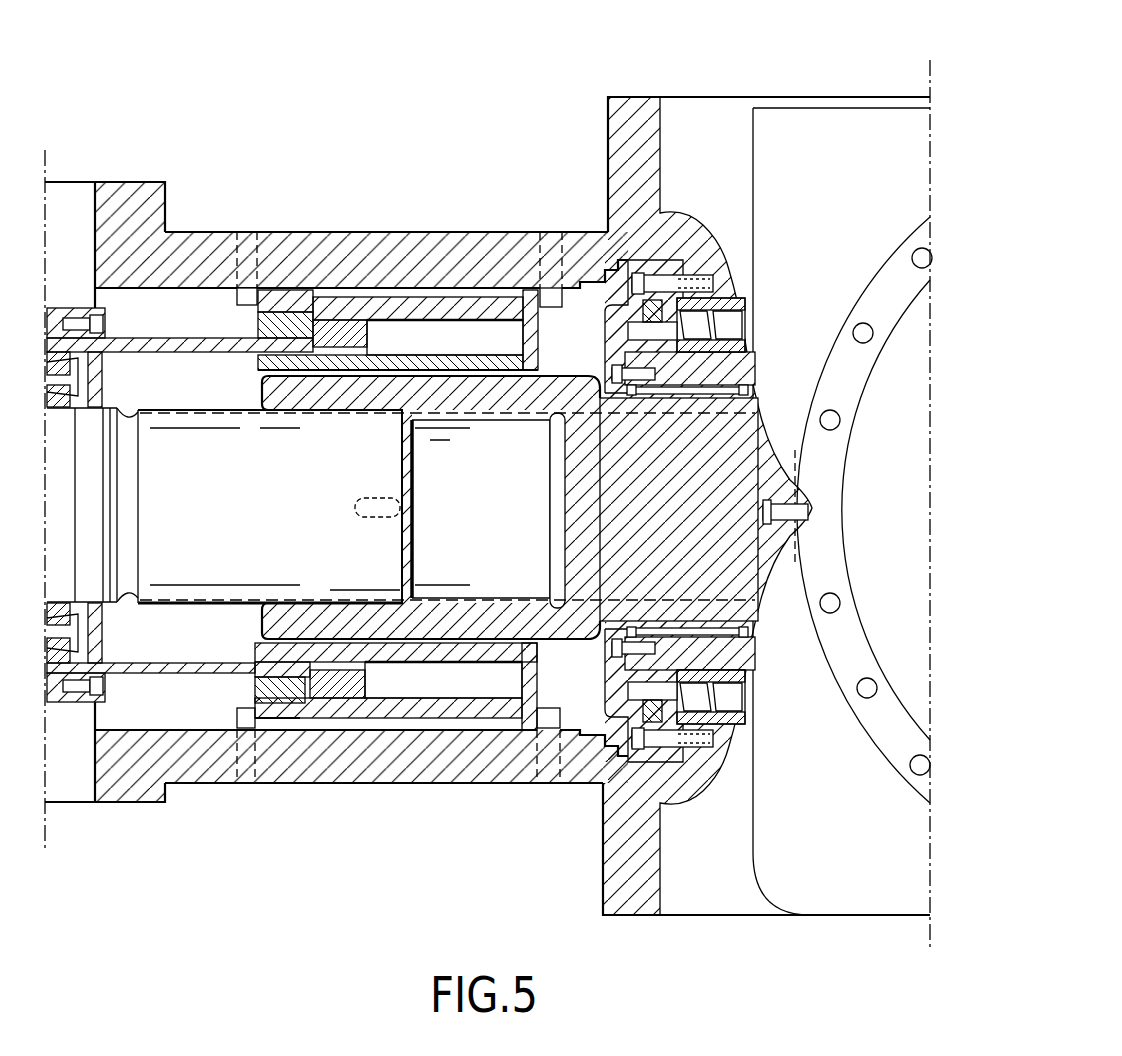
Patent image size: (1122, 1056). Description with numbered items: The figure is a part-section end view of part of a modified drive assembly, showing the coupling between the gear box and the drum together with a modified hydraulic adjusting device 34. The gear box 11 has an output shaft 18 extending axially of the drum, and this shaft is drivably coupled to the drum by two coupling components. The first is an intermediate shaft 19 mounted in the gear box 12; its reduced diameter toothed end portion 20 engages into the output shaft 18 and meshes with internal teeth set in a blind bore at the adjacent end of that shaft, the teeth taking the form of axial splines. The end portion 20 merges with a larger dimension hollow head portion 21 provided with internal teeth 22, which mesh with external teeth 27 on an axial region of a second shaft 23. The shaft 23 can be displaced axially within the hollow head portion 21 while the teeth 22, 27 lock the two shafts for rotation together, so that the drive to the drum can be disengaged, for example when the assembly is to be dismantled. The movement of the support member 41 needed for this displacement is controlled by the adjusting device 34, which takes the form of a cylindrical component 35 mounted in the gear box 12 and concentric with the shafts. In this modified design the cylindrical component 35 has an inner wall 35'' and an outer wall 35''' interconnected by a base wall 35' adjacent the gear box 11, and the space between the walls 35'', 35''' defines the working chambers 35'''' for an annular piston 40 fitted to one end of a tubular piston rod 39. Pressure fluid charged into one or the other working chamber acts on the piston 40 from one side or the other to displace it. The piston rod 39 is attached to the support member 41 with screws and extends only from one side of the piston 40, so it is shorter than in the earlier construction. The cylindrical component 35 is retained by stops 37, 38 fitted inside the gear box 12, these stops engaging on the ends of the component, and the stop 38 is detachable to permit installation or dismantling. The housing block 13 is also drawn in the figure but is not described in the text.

The gear box 11 is at (716, 112).
The gear box 12 is at (195, 240).
The housing end block 13 is at (70, 188).
The output shaft 18 is at (735, 652).
The intermediate shaft 19 is at (730, 563).
The reduced diameter toothed end portion 20 is at (745, 467).
The hollow head portion 21 is at (275, 623).
The internal teeth 22 is at (485, 420).
The shaft 23 is at (222, 483).
The external teeth 27 is at (210, 410).
The hydraulic adjusting device 34 is at (422, 730).
The cylindrical component 35 is at (398, 267).
The base wall 35' is at (562, 330).
The inner wall 35'' is at (388, 785).
The outer wall 35''' is at (396, 758).
The working chambers 35'''' is at (453, 259).
The stop 37 is at (242, 717).
The stop 38 is at (557, 713).
The tubular piston rod 39 is at (148, 667).
The annular piston 40 is at (340, 320).
The support member 41 is at (74, 316).